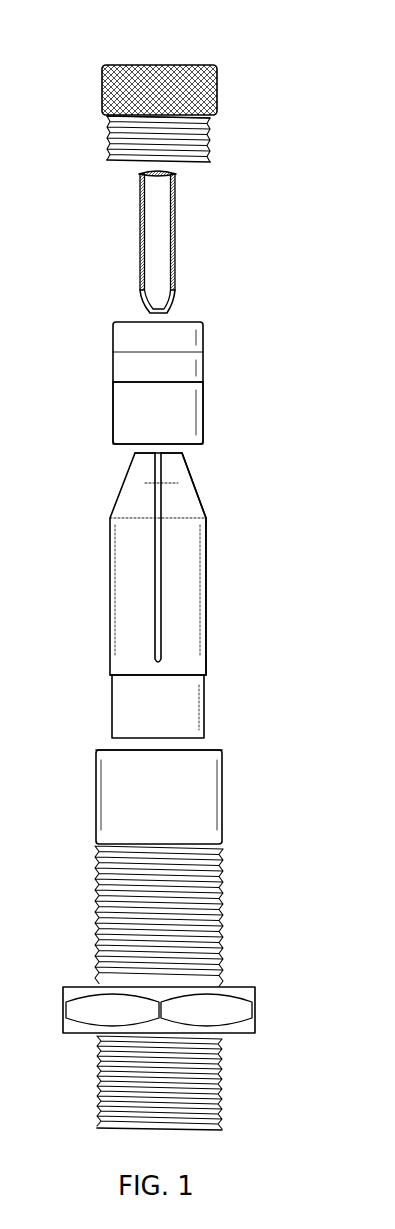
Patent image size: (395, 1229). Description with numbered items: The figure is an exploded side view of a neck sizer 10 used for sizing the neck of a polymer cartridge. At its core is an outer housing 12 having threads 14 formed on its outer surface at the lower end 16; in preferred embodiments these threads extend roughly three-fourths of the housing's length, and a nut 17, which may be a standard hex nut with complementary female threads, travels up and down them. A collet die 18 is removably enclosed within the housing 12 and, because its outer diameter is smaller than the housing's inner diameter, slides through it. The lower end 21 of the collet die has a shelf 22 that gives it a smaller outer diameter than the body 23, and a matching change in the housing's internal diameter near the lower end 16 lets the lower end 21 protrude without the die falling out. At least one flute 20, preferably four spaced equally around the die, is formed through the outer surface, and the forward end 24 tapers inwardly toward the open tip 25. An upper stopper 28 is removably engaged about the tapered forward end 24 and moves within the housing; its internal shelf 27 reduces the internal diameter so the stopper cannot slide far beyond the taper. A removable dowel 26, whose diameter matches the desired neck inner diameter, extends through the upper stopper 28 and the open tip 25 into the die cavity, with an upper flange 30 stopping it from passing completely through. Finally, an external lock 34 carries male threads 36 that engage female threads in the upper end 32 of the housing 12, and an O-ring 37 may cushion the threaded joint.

The neck sizer 10 is at (117, 45).
The outer housing 12 is at (222, 828).
The threads 14 is at (222, 936).
The lower end 16 is at (218, 1129).
The nut 17 is at (253, 1012).
The collet die 18 is at (208, 585).
The flute 20 is at (155, 500).
The lower end 21 is at (208, 706).
The shelf 22 is at (207, 676).
The body 23 is at (201, 640).
The forward end 24 is at (207, 520).
The open tip 25 is at (183, 455).
The dowel 26 is at (175, 280).
The internal shelf 27 is at (113, 382).
The upper stopper 28 is at (208, 408).
The upper flange 30 is at (176, 175).
The upper end 32 is at (103, 750).
The external lock 34 is at (215, 67).
The male threads 36 is at (108, 145).
The O-ring 37 is at (212, 127).